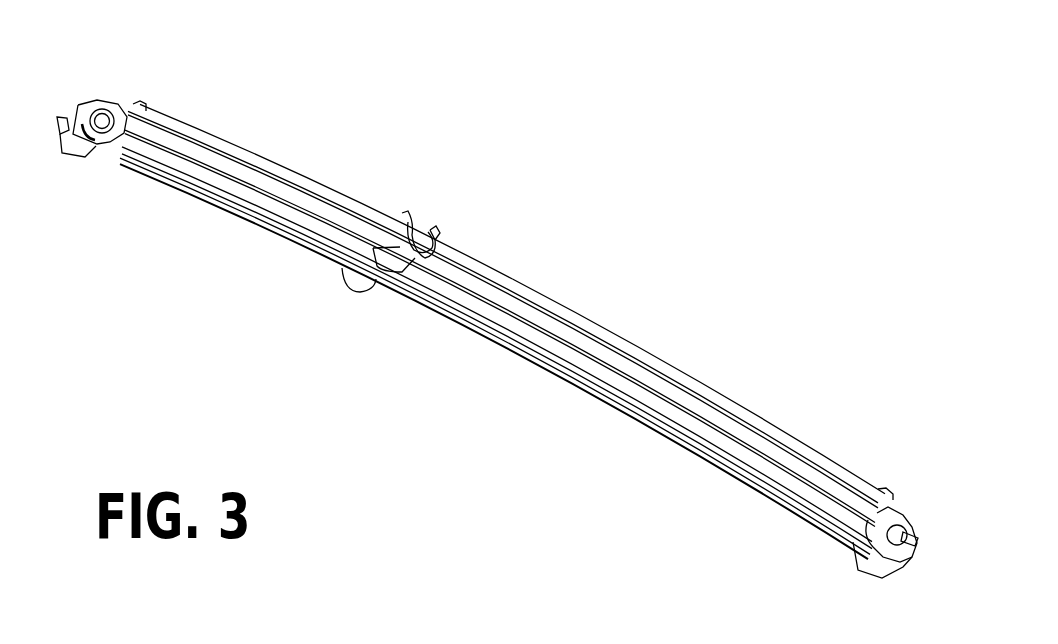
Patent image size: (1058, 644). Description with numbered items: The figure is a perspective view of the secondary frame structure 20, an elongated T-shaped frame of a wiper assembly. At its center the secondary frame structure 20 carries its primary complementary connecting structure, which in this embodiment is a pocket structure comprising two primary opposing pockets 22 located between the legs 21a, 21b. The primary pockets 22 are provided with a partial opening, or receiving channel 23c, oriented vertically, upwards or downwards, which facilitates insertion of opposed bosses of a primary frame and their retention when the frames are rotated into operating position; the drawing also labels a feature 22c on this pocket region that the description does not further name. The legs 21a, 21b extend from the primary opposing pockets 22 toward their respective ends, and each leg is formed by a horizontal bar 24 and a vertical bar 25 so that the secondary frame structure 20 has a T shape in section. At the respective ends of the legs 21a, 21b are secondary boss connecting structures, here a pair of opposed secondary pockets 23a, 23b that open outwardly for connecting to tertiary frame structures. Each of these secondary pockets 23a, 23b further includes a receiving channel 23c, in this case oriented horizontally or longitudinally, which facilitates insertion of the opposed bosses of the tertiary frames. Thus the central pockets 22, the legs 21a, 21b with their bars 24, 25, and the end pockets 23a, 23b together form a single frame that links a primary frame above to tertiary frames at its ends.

The secondary frame structure 20 is at (483, 192).
The leg 21a is at (328, 170).
The leg 21b is at (750, 398).
The primary opposing pocket 22 is at (417, 224).
The connector hook 22c is at (417, 222).
The secondary pocket 23a is at (93, 123).
The secondary pocket 23b is at (897, 530).
The receiving channel 23c is at (58, 133).
The horizontal bar 24 is at (590, 330).
The vertical bar 25 is at (335, 238).